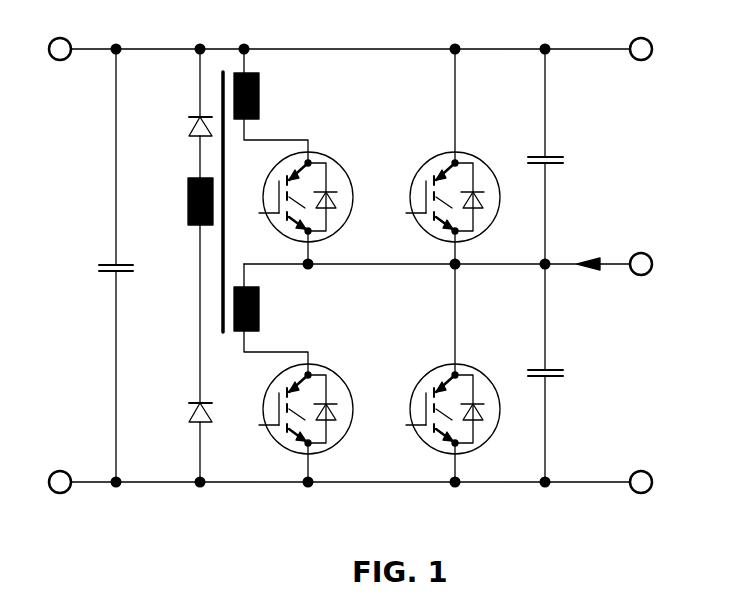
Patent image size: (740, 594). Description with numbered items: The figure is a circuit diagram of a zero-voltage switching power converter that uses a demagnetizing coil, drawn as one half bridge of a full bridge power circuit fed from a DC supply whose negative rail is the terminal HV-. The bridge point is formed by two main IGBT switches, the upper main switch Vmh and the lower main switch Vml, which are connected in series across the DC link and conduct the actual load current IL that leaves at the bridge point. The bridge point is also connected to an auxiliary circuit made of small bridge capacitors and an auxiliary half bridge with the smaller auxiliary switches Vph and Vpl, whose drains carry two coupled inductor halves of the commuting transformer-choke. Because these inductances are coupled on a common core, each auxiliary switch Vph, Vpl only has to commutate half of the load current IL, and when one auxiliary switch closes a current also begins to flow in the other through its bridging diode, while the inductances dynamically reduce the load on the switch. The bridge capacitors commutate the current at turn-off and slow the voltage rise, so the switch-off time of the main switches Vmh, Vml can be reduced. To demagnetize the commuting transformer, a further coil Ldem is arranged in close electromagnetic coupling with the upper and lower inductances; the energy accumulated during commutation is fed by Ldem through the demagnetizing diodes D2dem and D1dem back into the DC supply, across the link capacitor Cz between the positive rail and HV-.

The negative high-voltage terminal HV- is at (60, 461).
The DC link capacitor Cz is at (113, 265).
The diode D2 D2dem is at (184, 118).
The diode D1 D1dem is at (186, 405).
The further coil Ldem is at (183, 201).
The auxiliary switch Vph is at (296, 208).
The main switch Vmh is at (442, 156).
The auxiliary switch Vpl is at (298, 423).
The main switch Vml is at (444, 373).
The load current IL is at (603, 254).